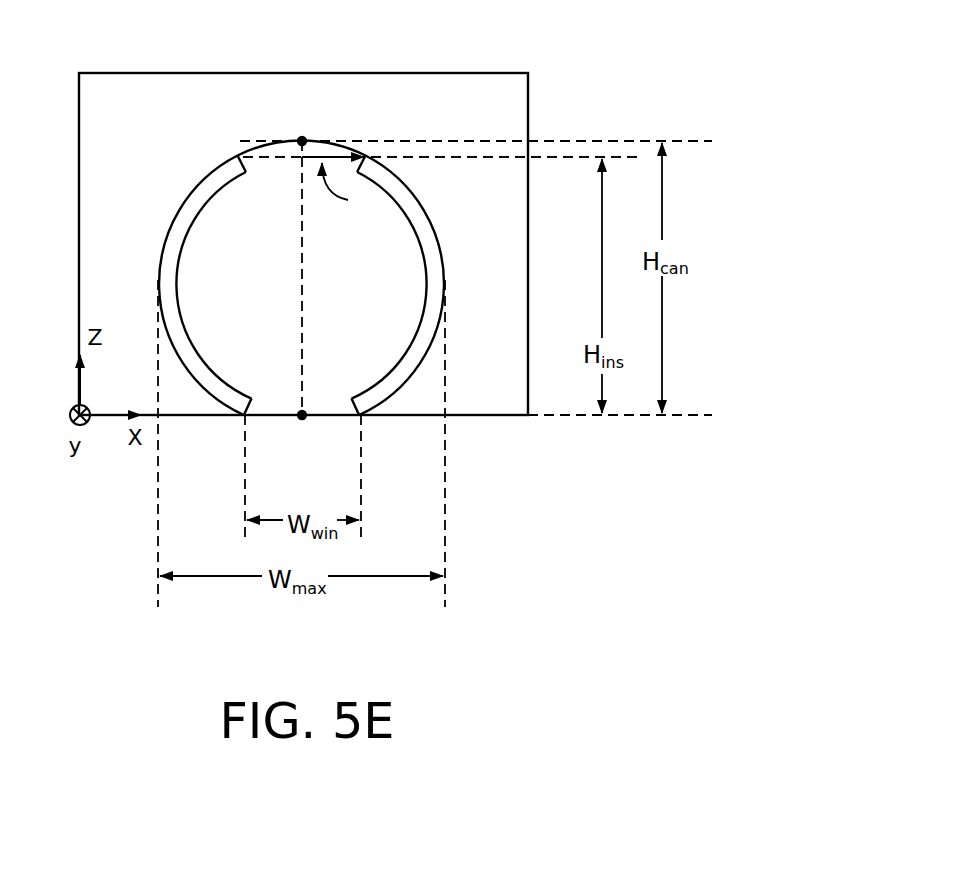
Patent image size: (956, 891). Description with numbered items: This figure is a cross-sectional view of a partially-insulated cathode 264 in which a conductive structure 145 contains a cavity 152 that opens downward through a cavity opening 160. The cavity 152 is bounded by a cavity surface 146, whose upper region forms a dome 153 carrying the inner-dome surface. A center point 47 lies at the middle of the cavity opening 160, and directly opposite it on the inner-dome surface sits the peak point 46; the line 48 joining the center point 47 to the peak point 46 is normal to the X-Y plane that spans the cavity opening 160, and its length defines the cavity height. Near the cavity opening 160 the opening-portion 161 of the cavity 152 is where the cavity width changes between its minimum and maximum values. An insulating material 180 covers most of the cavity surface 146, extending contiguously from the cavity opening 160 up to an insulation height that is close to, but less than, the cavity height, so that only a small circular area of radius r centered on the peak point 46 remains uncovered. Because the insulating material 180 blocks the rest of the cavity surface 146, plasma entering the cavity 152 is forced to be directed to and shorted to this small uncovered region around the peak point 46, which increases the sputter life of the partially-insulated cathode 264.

The partially-insulated cathode 264 is at (592, 118).
The conductive structure 145 is at (312, 73).
The peak point 46 is at (302, 141).
The line 48 is at (303, 300).
The cavity surface 146 is at (208, 177).
The dome 153 is at (453, 141).
The insulating material 180 is at (207, 357).
The cavity 152 is at (259, 360).
The center point 47 is at (302, 415).
The cavity opening 160 is at (283, 442).
The opening-portion 161 is at (210, 404).